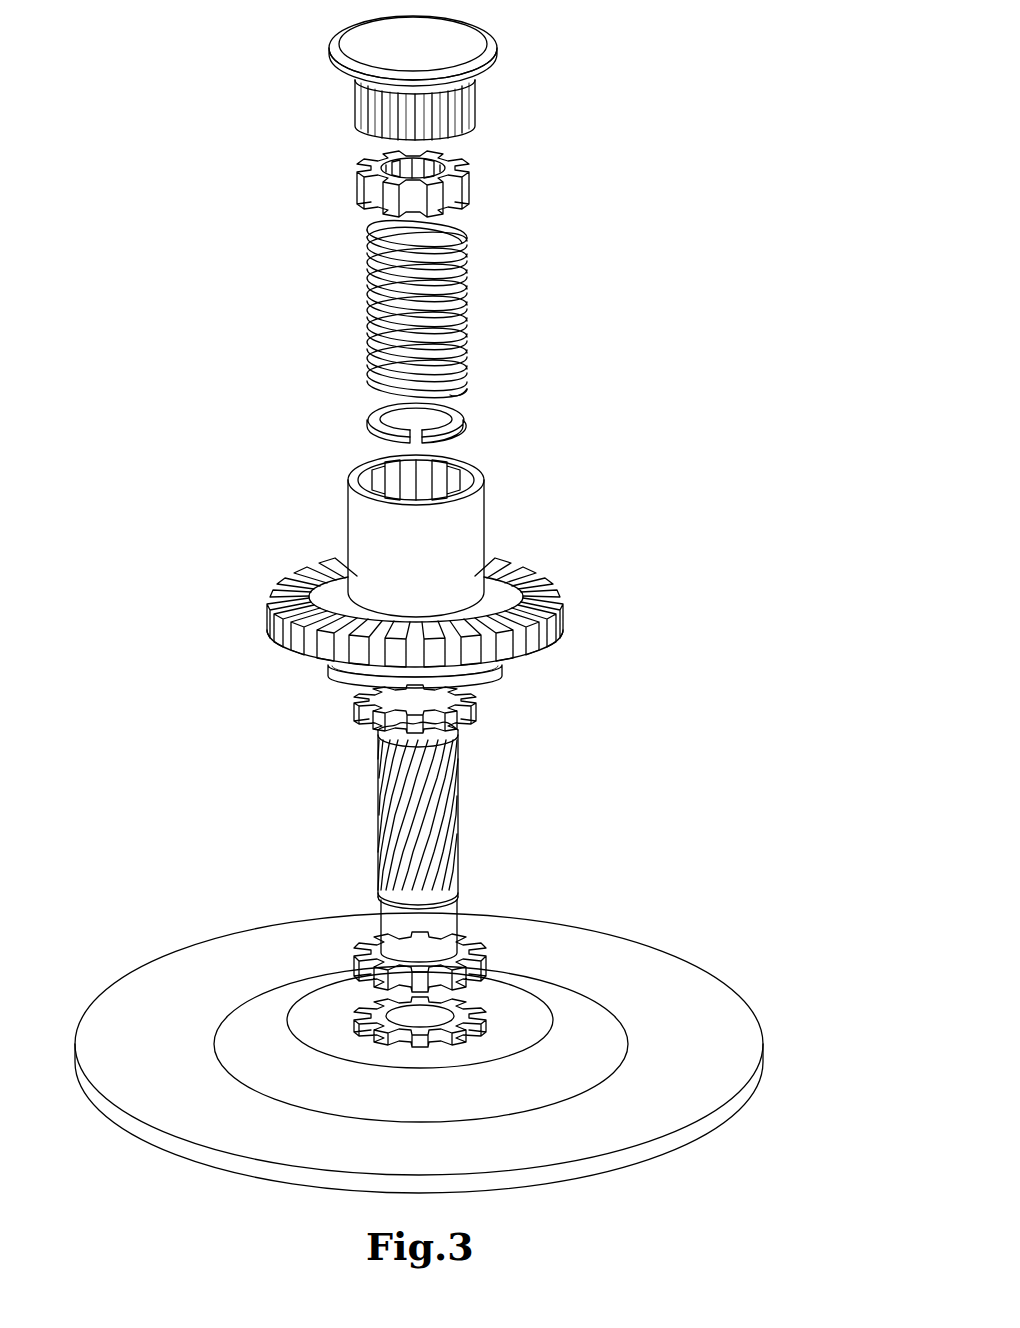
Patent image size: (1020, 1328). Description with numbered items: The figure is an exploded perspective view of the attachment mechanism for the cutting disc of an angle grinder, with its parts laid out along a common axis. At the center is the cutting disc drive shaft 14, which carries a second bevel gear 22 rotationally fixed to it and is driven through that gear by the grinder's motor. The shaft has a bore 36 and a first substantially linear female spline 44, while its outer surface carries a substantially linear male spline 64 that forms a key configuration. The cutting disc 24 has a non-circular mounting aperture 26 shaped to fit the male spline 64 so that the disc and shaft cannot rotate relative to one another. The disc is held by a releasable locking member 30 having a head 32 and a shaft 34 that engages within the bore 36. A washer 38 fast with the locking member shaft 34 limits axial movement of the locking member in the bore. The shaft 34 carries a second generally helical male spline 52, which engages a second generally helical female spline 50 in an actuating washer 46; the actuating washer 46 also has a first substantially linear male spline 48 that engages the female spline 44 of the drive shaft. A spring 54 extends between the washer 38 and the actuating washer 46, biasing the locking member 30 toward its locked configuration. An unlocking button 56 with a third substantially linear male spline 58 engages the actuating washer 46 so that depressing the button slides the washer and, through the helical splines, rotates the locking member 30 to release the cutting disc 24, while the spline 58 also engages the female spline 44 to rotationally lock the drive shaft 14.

The cutting disc drive shaft 14 is at (505, 515).
The second bevel gear 22 is at (298, 570).
The cutting disc 24 is at (662, 1142).
The mounting aperture 26 is at (398, 1030).
The releasable locking member 30 is at (478, 820).
The head 32 is at (477, 940).
The locking member shaft 34 is at (390, 923).
The bore 36 is at (412, 490).
The washer 38 is at (462, 416).
The first substantially linear female spline 44 is at (470, 470).
The actuating washer 46 is at (414, 157).
The first substantially linear male spline 48 is at (352, 186).
The second generally helical female spline 50 is at (460, 155).
The second generally helical male spline 52 is at (395, 822).
The spring 54 is at (368, 292).
The unlocking button 56 is at (515, 61).
The third substantially linear male spline 58 is at (352, 98).
The substantially linear male spline 64 is at (352, 718).